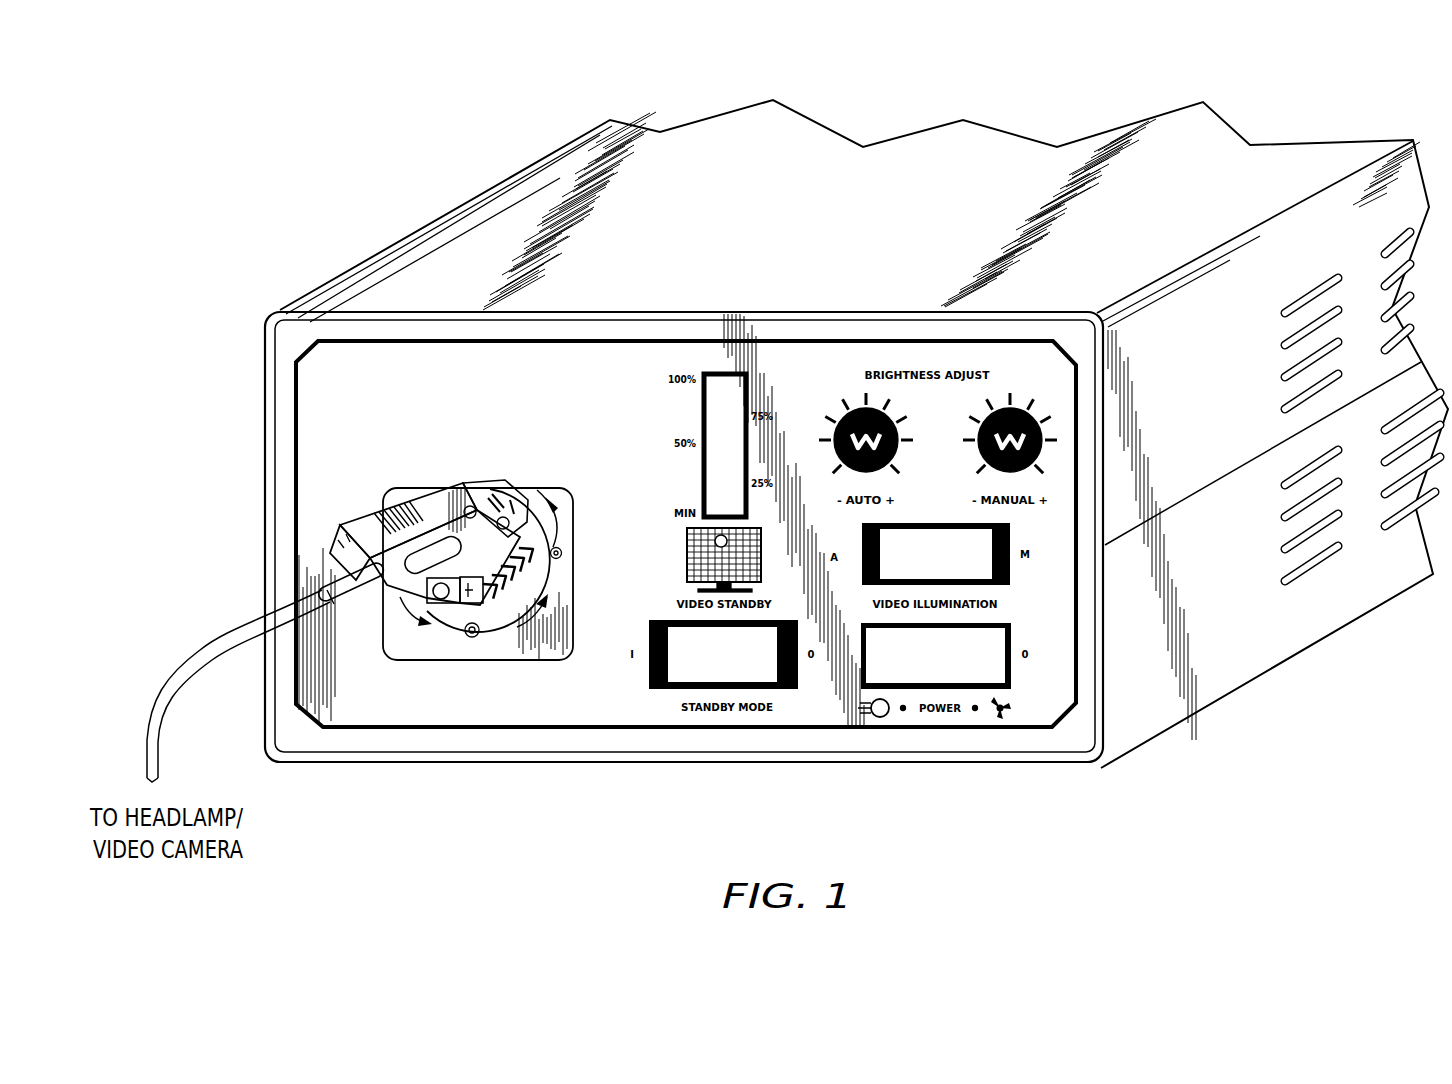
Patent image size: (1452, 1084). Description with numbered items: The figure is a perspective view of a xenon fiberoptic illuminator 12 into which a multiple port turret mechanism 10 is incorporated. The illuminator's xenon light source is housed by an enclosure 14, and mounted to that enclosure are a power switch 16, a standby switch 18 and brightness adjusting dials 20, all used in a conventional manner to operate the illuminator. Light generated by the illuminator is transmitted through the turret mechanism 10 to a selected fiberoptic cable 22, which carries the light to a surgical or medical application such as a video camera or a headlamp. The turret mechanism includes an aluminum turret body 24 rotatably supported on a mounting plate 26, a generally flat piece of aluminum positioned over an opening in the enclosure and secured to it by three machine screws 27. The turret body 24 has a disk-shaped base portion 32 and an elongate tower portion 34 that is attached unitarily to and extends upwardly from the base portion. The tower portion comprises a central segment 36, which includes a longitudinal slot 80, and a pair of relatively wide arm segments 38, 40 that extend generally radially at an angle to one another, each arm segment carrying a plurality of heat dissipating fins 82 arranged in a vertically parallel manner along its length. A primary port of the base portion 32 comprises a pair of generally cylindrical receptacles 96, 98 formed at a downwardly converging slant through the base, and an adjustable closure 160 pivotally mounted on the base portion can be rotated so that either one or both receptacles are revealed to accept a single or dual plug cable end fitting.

The multiple port turret mechanism 10 is at (328, 650).
The xenon fiberoptic illuminator 12 is at (445, 250).
The enclosure 14 is at (357, 282).
The power switch 16 is at (986, 662).
The standby switch 18 is at (730, 672).
The brightness adjusting dial 20 is at (920, 480).
The fiberoptic cable 22 is at (215, 645).
The turret body 24 is at (424, 533).
The mounting plate 26 is at (575, 616).
The machine screw 27 is at (561, 553).
The base portion 32 is at (493, 610).
The tower portion 34 is at (403, 584).
The central segment 36 is at (403, 598).
The arm segment 38 is at (466, 618).
The arm segment 40 is at (334, 541).
The longitudinal slot 80 is at (437, 545).
The heat dissipating fins 82 is at (392, 501).
The cylindrical receptacle 96 is at (540, 490).
The cylindrical receptacle 98 is at (473, 491).
The adjustable closure 160 is at (496, 503).